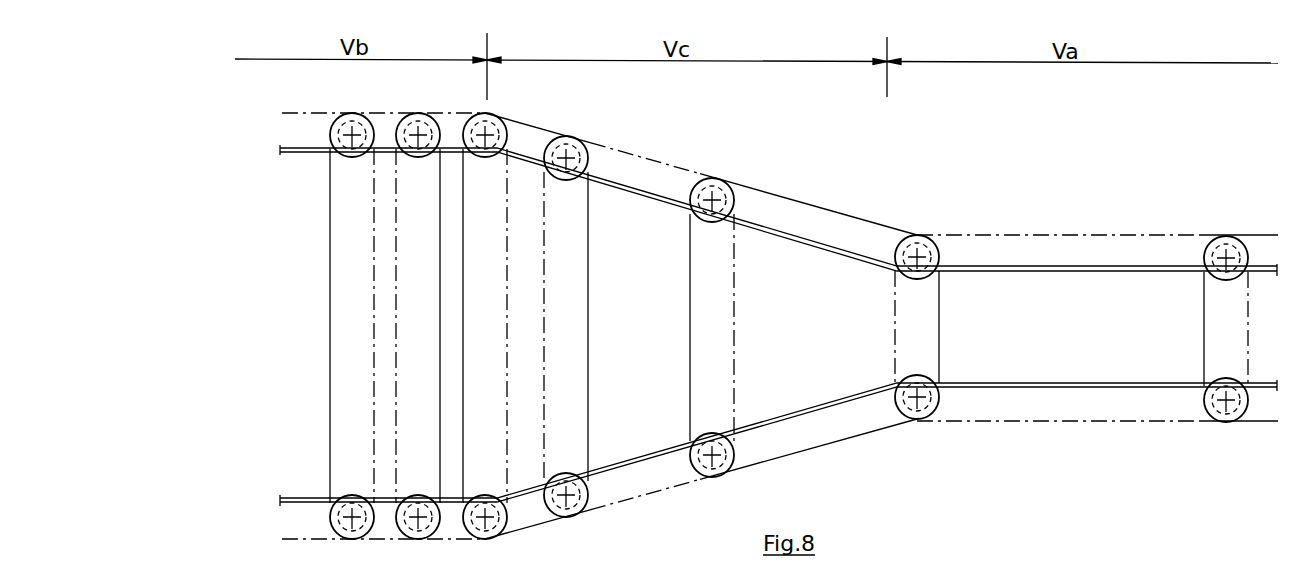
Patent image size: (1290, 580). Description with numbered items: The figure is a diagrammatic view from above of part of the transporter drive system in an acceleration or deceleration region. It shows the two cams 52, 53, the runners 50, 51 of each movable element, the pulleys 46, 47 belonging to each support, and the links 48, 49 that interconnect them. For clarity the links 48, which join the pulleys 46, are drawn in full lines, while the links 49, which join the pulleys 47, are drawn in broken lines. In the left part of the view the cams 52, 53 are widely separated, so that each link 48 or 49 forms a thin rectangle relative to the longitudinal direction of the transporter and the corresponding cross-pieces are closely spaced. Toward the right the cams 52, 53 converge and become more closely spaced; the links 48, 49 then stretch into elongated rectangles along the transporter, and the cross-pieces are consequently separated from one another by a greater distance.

The pulley 46 is at (343, 129).
The pulley 47 is at (333, 524).
The link 48 is at (440, 312).
The link 49 is at (507, 383).
The runner 50 is at (343, 137).
The runner 51 is at (343, 518).
The cam 52 is at (307, 152).
The cam 53 is at (292, 500).